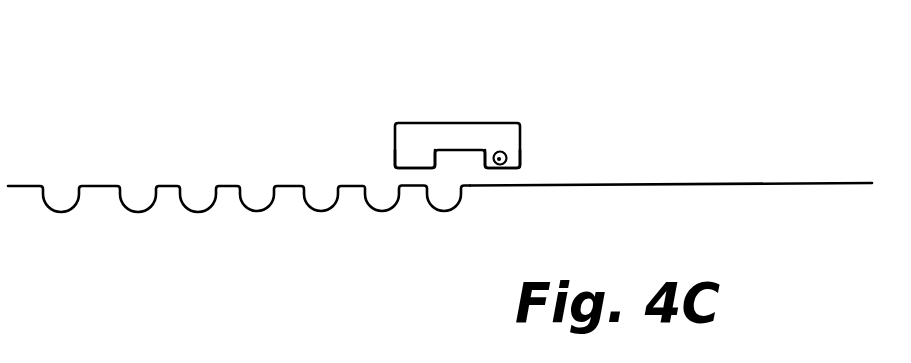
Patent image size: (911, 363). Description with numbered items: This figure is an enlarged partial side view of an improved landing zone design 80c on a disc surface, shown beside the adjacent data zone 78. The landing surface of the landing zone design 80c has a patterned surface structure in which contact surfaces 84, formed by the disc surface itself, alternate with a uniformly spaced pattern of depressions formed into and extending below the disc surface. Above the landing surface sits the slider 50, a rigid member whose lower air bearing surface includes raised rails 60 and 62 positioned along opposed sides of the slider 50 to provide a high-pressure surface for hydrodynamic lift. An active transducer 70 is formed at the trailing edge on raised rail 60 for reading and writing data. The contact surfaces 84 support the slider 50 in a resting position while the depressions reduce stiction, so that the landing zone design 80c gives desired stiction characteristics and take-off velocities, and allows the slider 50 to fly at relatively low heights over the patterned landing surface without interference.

The slider 50 is at (481, 100).
The raised rail 60 is at (492, 139).
The raised rail 62 is at (418, 146).
The active transducer 70 is at (507, 152).
The data zone 78 is at (687, 184).
The landing zone design 80c is at (239, 149).
The contact surfaces 84 is at (267, 122).